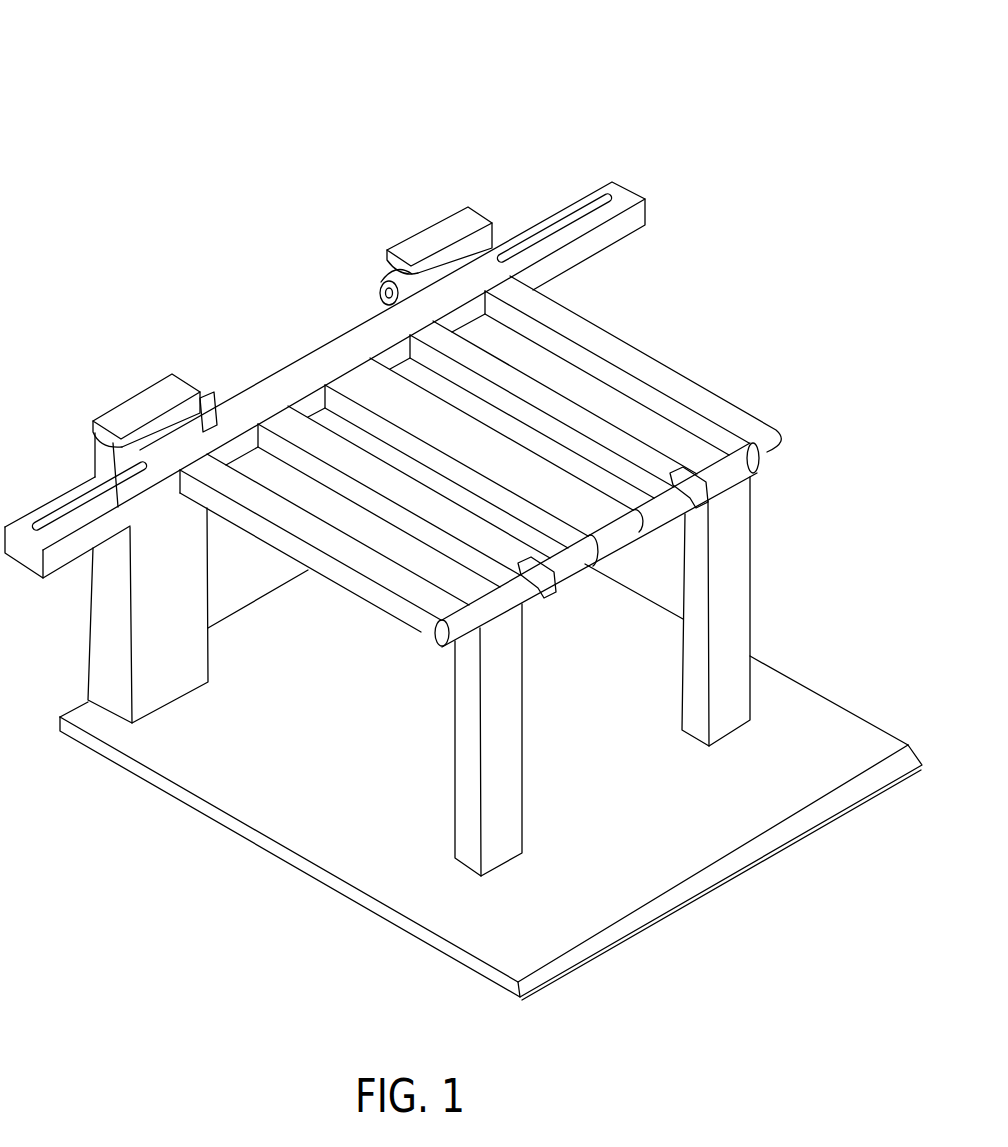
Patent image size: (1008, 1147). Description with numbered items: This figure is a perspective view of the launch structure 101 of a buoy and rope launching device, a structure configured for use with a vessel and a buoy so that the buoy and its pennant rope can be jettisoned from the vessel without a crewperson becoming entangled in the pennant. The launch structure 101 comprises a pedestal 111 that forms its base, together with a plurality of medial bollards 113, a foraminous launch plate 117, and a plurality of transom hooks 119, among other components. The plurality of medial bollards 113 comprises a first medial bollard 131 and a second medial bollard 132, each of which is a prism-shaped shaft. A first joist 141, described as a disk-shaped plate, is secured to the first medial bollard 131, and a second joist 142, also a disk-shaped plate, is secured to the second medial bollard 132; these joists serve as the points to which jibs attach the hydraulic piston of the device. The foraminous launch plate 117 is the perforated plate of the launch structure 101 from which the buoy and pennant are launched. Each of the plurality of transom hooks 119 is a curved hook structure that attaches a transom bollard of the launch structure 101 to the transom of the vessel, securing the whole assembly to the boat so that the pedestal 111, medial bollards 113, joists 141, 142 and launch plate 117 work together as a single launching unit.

The launch structure 101 is at (204, 90).
The pedestal 111 is at (305, 873).
The plurality of medial bollards 113 is at (377, 503).
The foraminous launch plate 117 is at (633, 367).
The plurality of transom hooks 119 is at (738, 472).
The first medial bollard 131 is at (128, 398).
The second medial bollard 132 is at (458, 222).
The first joist 141 is at (206, 404).
The second joist 142 is at (377, 295).